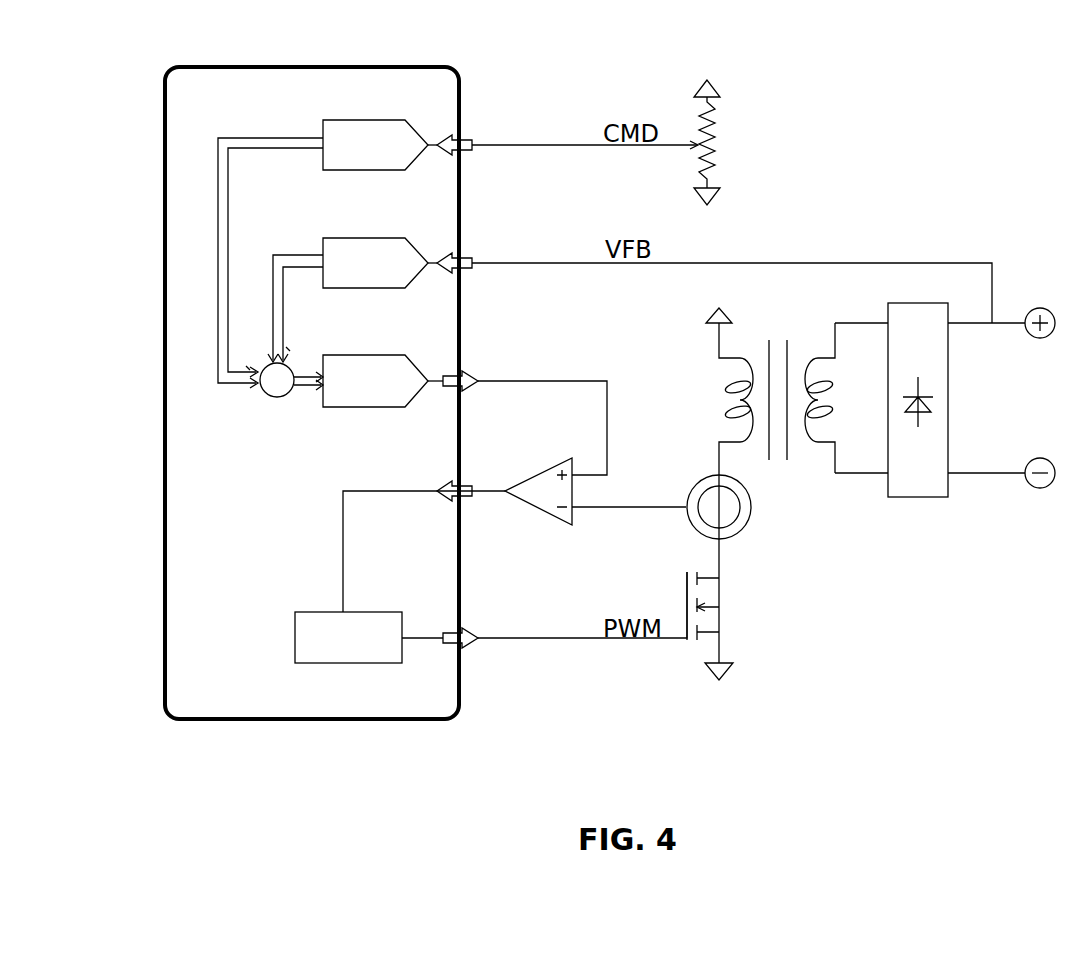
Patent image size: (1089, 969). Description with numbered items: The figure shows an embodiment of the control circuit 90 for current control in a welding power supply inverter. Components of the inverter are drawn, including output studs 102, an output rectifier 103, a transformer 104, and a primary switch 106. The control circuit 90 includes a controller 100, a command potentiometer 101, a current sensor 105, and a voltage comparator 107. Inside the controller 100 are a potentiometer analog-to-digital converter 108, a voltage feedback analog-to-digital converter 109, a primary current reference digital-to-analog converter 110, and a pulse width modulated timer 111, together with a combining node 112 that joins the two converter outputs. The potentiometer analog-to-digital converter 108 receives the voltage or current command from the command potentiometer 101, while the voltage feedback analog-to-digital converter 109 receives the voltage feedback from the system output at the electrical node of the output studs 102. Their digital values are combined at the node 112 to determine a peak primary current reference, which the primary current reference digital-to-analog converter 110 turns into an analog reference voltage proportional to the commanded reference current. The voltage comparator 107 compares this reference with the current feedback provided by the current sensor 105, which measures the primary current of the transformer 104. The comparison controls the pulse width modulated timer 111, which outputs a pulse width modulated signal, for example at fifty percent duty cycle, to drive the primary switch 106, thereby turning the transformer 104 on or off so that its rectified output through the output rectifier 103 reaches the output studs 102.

The control circuit 90 is at (98, 433).
The controller 100 is at (321, 383).
The command potentiometer 101 is at (720, 142).
The output studs 102 is at (1001, 390).
The output rectifier 103 is at (891, 392).
The transformer 104 is at (770, 391).
The current sensor 105 is at (736, 526).
The primary switch 106 is at (720, 626).
The voltage comparator 107 is at (561, 459).
The potentiometer analog-to-digital converter 108 is at (327, 245).
The voltage feedback analog-to-digital converter 109 is at (352, 292).
The primary current reference digital-to-analog converter 110 is at (383, 374).
The pulse width modulated timer 111 is at (369, 577).
The summing junction 112 is at (284, 385).